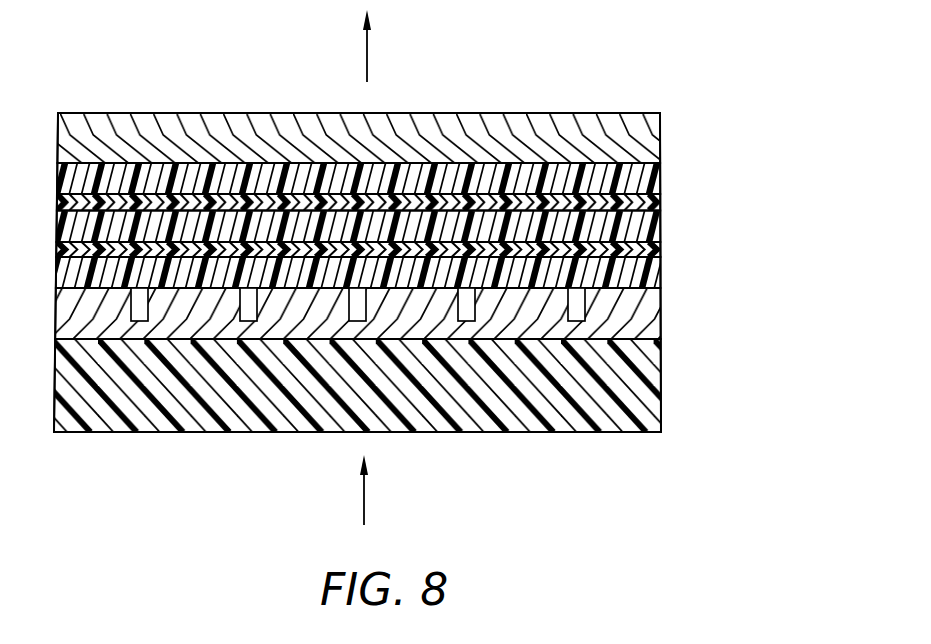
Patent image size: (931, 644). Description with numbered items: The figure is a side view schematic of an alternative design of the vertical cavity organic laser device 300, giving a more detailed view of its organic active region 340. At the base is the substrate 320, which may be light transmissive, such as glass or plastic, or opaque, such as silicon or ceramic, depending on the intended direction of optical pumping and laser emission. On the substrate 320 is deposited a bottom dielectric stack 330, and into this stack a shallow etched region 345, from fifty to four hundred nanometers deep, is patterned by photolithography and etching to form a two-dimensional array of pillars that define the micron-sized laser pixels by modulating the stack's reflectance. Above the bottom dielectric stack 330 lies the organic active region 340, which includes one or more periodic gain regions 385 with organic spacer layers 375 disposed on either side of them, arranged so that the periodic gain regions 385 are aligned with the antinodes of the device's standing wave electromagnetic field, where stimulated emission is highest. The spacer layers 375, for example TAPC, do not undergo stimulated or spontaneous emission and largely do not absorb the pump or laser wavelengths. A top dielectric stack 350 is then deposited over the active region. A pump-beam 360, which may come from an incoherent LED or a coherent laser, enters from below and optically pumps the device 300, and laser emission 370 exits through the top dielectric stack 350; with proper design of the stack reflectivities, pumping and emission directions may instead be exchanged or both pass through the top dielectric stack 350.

The vertical cavity organic laser device 300 is at (460, 226).
The substrate 320 is at (661, 382).
The bottom dielectric stack 330 is at (661, 313).
The organic active region 340 is at (461, 253).
The etched region 345 is at (577, 313).
The top dielectric stack 350 is at (661, 118).
The pump-beam 360 is at (365, 496).
The laser emission 370 is at (368, 52).
The organic spacer layers 375 is at (661, 177).
The periodic gain regions 385 is at (661, 200).